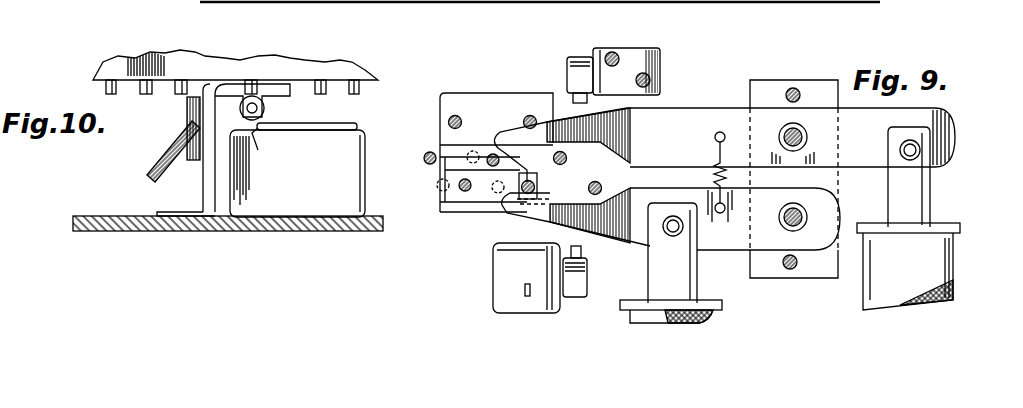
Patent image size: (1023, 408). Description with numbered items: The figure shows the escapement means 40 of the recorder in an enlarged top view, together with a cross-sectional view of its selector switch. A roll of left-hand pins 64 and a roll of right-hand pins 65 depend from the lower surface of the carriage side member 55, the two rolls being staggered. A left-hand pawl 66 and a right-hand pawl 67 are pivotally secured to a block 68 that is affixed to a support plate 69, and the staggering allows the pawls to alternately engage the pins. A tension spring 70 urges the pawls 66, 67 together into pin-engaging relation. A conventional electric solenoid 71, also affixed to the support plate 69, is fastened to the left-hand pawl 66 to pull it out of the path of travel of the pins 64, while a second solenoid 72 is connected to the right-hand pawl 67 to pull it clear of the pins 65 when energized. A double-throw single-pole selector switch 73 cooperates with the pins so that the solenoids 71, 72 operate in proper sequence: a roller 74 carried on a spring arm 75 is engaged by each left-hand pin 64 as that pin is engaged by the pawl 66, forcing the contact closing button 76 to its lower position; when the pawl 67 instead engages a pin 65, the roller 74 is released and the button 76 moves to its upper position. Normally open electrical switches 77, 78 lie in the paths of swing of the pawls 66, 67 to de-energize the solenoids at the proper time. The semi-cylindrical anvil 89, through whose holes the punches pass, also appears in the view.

In FIG. 9, the escapement means 40 is at (832, 72).
In FIG. 10, the right side member 55 is at (252, 76).
In FIG. 10, the left-hand pins 64 is at (187, 80).
In FIG. 9, the left-hand pins 64 is at (412, 152).
In FIG. 10, the right-hand pins 65 is at (365, 90).
In FIG. 9, the right-hand pins 65 is at (567, 164).
In FIG. 10, the left-hand pawl 66 is at (183, 132).
In FIG. 9, the left-hand pawl 66 is at (645, 240).
In FIG. 9, the right-hand pawl 67 is at (695, 105).
In FIG. 9, the block 68 is at (783, 72).
In FIG. 10, the support plate 69 is at (228, 230).
In FIG. 9, the tension spring 70 is at (710, 153).
In FIG. 9, the solenoid 71 is at (640, 315).
In FIG. 9, the second solenoid 72 is at (930, 268).
In FIG. 10, the selector switch 73 is at (334, 182).
In FIG. 9, the selector switch 73 is at (447, 210).
In FIG. 10, the roller 74 is at (267, 107).
In FIG. 9, the roller 74 is at (540, 188).
In FIG. 10, the spring arm 75 is at (322, 125).
In FIG. 9, the spring arm 75 is at (482, 193).
In FIG. 10, the contact closing button 76 is at (259, 148).
In FIG. 9, the electrical switch 77 is at (583, 251).
In FIG. 9, the electrical switch 78 is at (573, 103).
In FIG. 9, the anvil 89 is at (507, 278).